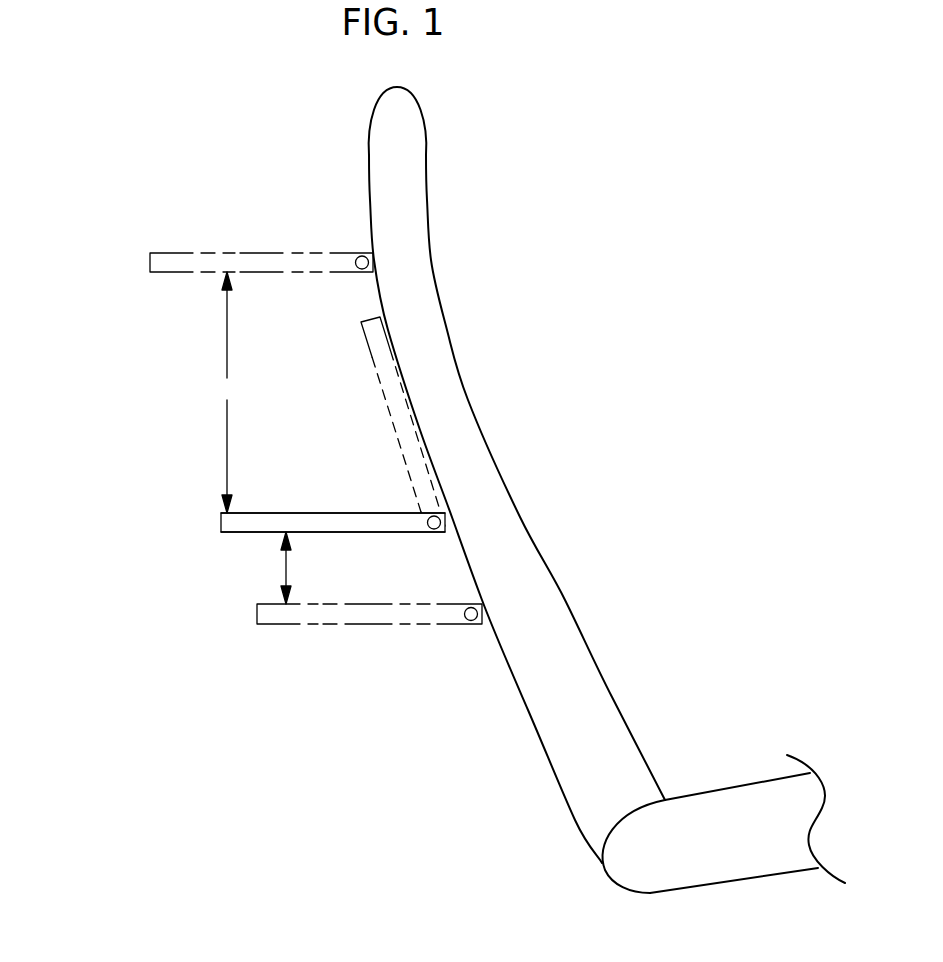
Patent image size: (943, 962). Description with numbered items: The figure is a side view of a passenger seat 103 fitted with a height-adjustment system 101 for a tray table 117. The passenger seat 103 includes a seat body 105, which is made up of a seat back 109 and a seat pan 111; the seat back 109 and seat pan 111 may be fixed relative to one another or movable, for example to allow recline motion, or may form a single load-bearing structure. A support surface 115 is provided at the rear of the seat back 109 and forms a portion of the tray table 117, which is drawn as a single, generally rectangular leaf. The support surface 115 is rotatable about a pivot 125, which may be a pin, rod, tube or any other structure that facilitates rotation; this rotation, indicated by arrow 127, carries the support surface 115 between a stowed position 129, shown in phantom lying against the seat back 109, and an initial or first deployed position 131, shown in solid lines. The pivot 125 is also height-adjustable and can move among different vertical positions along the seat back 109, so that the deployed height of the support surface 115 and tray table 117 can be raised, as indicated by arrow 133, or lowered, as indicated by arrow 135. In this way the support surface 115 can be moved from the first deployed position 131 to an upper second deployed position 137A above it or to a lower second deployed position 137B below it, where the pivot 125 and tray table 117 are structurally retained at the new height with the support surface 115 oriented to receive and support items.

The height-adjustment system 101 is at (607, 490).
The passenger seat 103 is at (602, 392).
The seat body 105 is at (665, 588).
The seat back 109 is at (530, 563).
The seat pan 111 is at (743, 798).
The support surface 115 is at (249, 512).
The tray table 117 is at (238, 532).
The pivot 125 is at (441, 520).
The arrow 127 is at (376, 432).
The stowed position 129 is at (345, 340).
The first deployed position 131 is at (331, 513).
The arrow 133 is at (227, 392).
The arrow 135 is at (290, 570).
The upper second deployed position 137A is at (124, 271).
The lower second deployed position 137B is at (279, 645).